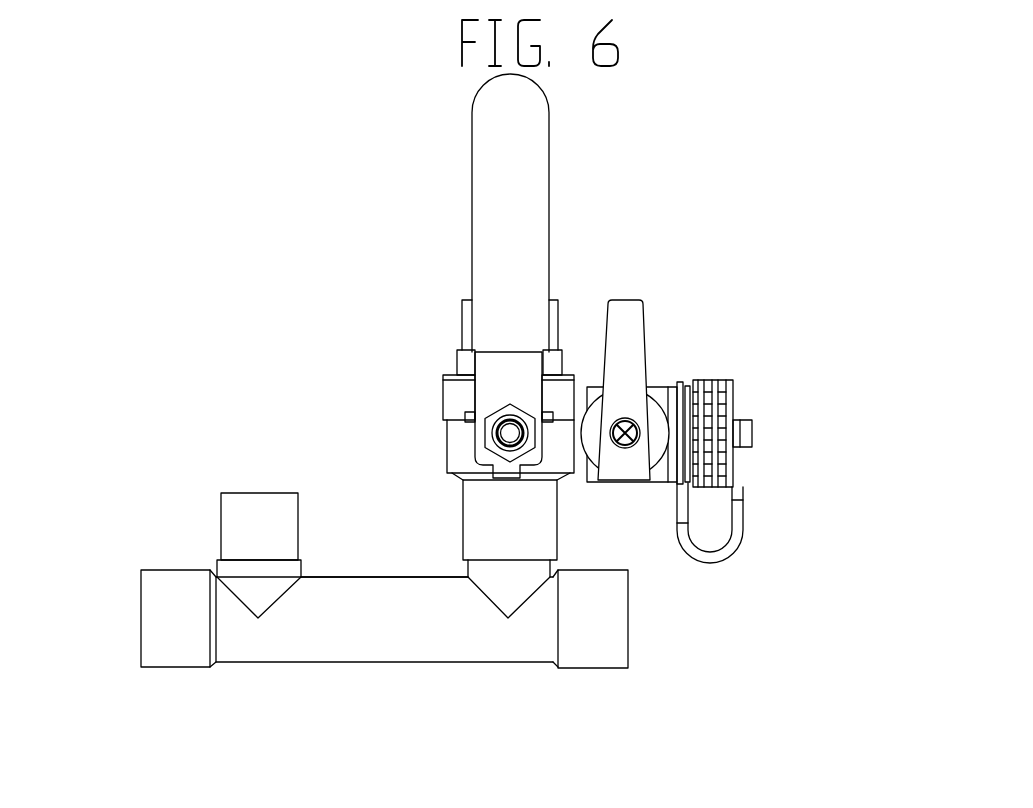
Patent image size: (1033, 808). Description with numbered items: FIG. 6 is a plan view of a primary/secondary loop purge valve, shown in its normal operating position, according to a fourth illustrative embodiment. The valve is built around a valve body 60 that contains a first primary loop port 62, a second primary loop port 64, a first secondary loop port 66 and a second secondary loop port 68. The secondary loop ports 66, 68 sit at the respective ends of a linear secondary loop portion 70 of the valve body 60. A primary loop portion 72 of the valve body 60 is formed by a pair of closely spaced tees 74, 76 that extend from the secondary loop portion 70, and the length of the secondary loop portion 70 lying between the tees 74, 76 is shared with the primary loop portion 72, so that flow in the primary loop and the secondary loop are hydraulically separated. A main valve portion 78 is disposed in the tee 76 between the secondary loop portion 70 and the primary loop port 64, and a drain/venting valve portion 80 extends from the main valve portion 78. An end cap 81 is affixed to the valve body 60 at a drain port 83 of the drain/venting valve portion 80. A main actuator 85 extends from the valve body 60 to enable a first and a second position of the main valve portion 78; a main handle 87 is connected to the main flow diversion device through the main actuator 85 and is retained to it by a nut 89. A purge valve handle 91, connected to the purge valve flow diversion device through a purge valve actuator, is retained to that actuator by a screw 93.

The valve body 60 is at (168, 271).
The first primary loop port 62 is at (259, 493).
The second primary loop port 64 is at (556, 298).
The first secondary loop port 66 is at (141, 618).
The second secondary loop port 68 is at (629, 620).
The secondary loop portion 70 is at (388, 577).
The primary loop portion 72 is at (392, 503).
The tee 74 is at (220, 545).
The tee 76 is at (559, 537).
The main valve portion 78 is at (444, 390).
The drain/venting valve portion 80 is at (592, 380).
The end cap 81 is at (740, 381).
The drain port 83 is at (688, 485).
The main actuator 85 is at (513, 420).
The main handle 87 is at (550, 155).
The nut 89 is at (506, 407).
The purge valve handle 91 is at (645, 300).
The screw 93 is at (630, 415).